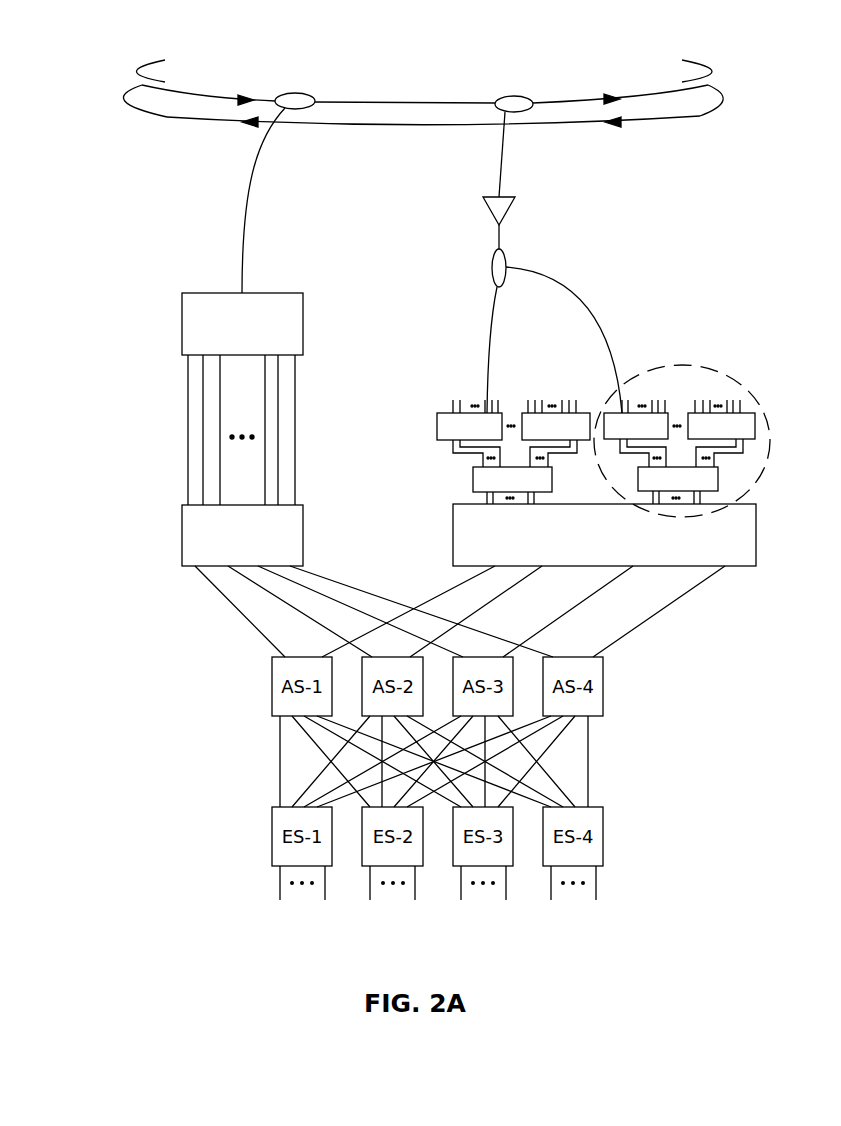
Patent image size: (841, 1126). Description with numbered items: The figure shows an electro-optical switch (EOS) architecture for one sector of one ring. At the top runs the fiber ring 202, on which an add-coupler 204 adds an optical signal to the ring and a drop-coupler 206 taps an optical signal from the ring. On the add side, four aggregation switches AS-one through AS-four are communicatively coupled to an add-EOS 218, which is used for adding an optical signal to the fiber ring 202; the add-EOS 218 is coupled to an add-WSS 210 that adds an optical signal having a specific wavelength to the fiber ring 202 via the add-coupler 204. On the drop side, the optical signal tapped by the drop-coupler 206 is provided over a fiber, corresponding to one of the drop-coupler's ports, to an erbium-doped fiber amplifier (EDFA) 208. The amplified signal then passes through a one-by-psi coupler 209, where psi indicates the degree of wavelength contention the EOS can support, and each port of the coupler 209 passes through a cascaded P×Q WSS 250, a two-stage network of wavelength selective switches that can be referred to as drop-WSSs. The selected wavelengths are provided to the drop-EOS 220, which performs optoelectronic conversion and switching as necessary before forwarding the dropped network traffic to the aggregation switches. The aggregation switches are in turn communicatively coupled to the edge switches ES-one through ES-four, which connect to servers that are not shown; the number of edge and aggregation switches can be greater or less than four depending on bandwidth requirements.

The fiber ring 202 is at (387, 81).
The add-coupler 204 is at (297, 67).
The drop-coupler 206 is at (512, 69).
The erbium-doped fiber amplifier (EDFA) 208 is at (472, 214).
The 1×ψ coupler 209 is at (464, 275).
The add-WSS 210 is at (242, 324).
The add-EOS 218 is at (242, 535).
The drop-EOS 220 is at (604, 535).
The cascaded P×Q WSS 250 is at (723, 377).